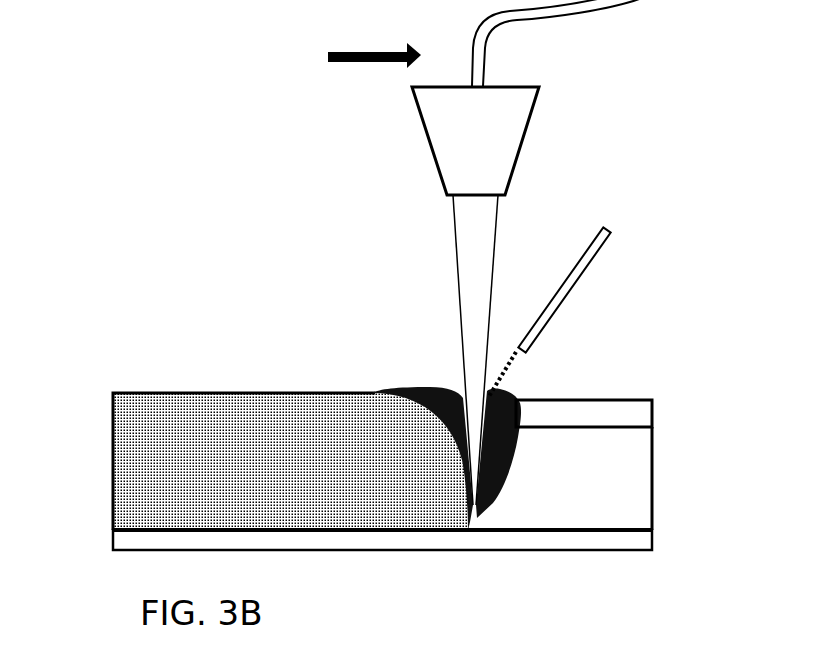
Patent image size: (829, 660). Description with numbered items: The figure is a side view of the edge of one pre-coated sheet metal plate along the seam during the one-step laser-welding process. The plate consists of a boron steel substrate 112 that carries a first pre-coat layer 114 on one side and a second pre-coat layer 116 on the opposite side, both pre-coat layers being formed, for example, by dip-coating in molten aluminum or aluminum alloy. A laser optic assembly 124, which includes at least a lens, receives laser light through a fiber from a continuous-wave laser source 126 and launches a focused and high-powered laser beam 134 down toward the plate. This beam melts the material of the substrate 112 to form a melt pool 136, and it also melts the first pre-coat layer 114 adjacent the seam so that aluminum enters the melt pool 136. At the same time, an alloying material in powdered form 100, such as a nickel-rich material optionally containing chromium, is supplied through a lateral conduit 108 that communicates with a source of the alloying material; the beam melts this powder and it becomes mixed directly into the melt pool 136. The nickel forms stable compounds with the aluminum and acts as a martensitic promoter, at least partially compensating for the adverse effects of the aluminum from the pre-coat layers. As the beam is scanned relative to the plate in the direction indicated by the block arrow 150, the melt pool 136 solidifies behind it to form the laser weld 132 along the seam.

The alloying material in powdered form 100 is at (510, 363).
The lateral conduit 108 is at (572, 282).
The substrate 112 is at (633, 505).
The first pre-coat layer 114 is at (638, 400).
The second pre-coat layer 116 is at (653, 538).
The laser optic assembly 124 is at (507, 132).
The laser source 126 is at (650, 0).
The laser weld 132 is at (223, 425).
The focused and high-powered laser beam 134 is at (478, 252).
The melt pool 136 is at (430, 402).
The block arrow 150 is at (348, 60).